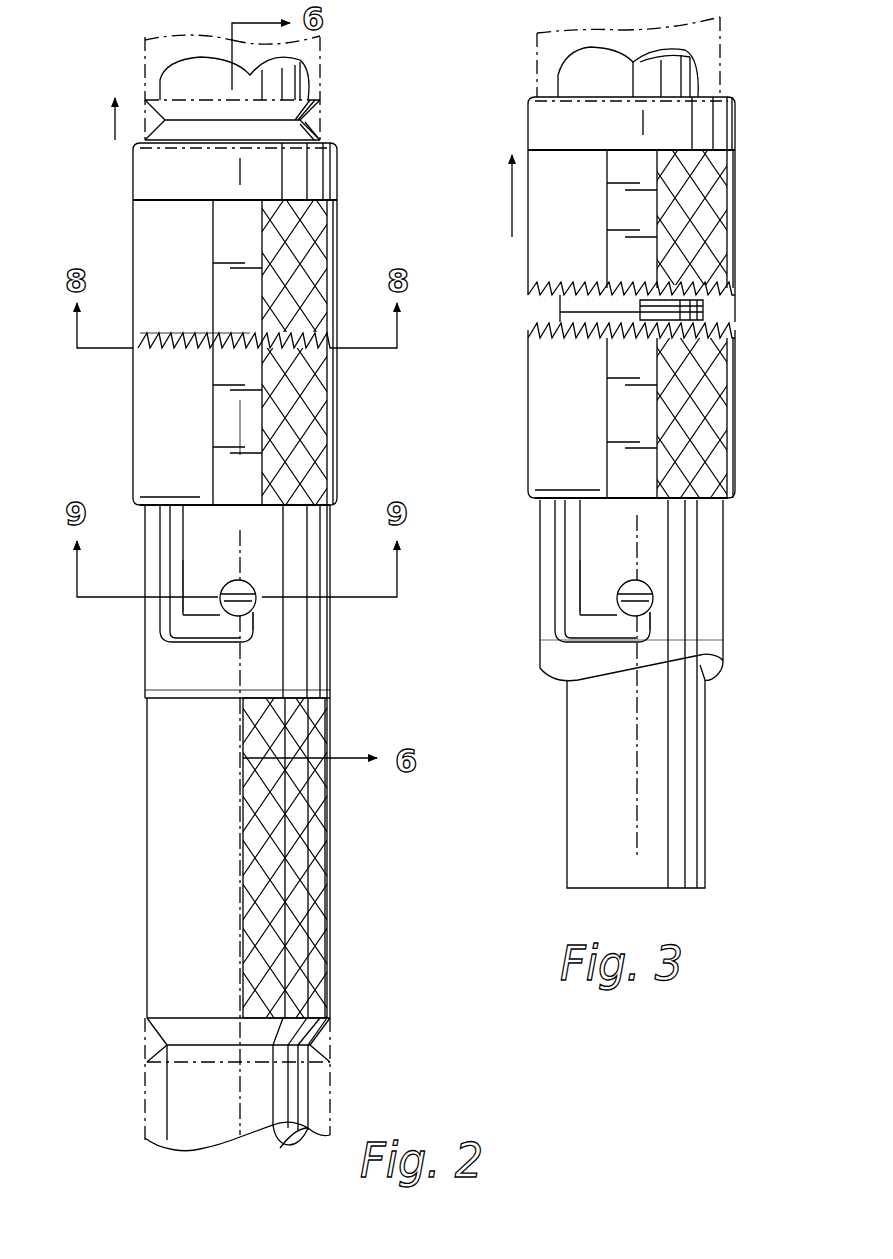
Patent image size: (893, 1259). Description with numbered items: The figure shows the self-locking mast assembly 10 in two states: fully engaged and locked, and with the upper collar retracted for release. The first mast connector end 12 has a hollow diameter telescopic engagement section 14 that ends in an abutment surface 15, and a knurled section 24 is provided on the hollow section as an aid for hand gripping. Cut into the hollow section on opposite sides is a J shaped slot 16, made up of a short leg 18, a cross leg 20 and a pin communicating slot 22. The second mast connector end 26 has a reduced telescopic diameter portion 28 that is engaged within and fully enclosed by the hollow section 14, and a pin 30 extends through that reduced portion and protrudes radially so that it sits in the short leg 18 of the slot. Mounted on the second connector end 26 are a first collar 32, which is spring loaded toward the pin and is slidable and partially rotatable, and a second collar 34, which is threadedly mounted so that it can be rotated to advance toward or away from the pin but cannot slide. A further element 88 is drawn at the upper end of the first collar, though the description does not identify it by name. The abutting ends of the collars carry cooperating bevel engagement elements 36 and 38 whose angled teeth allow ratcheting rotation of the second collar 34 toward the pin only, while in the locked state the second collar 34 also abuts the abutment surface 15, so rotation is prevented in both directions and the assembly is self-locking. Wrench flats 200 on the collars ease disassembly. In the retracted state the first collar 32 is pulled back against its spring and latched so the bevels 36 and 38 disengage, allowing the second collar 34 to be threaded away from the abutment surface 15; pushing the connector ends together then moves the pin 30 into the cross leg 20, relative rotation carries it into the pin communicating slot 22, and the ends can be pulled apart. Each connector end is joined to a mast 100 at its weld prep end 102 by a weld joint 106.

In FIG. 2, the self-locking mast assembly 10 is at (112, 752).
In FIG. 3, the self-locking mast assembly 10 is at (538, 737).
In FIG. 2, the first mast connector end 12 is at (147, 937).
In FIG. 2, the hollow diameter telescopic engagement section 14 is at (145, 662).
In FIG. 3, the hollow diameter telescopic engagement section 14 is at (540, 610).
In FIG. 2, the abutment surface 15 is at (308, 503).
In FIG. 3, the abutment surface 15 is at (710, 497).
In FIG. 2, the J shaped slot 16 is at (160, 632).
In FIG. 3, the J shaped slot 16 is at (555, 632).
In FIG. 2, the short leg 18 is at (257, 622).
In FIG. 3, the short leg 18 is at (652, 622).
In FIG. 2, the cross leg 20 is at (197, 635).
In FIG. 3, the cross leg 20 is at (612, 635).
In FIG. 2, the pin communicating slot 22 is at (167, 562).
In FIG. 3, the pin communicating slot 22 is at (565, 555).
In FIG. 2, the knurled section 24 is at (330, 883).
In FIG. 2, the second mast connector end 26 is at (178, 72).
In FIG. 3, the second mast connector end 26 is at (558, 68).
In FIG. 3, the telescopic diameter portion 28 is at (567, 808).
In FIG. 2, the pin 30 is at (245, 603).
In FIG. 3, the pin 30 is at (642, 592).
In FIG. 2, the first collar 32 is at (133, 218).
In FIG. 3, the first collar 32 is at (735, 178).
In FIG. 2, the second collar 34 is at (133, 437).
In FIG. 3, the second collar 34 is at (735, 412).
In FIG. 2, the bevel engagement element 36 is at (178, 345).
In FIG. 3, the bevel engagement element 36 is at (557, 335).
In FIG. 2, the bevel engagement element 38 is at (150, 330).
In FIG. 3, the bevel engagement element 38 is at (528, 258).
In FIG. 2, the cap 88 is at (337, 175).
In FIG. 3, the cap 88 is at (735, 120).
In FIG. 2, the mast 100 is at (145, 1115).
In FIG. 2, the weld prep end 102 is at (147, 1062).
In FIG. 2, the weld joint 106 is at (145, 1040).
In FIG. 2, the wrench flats 200 is at (245, 427).
In FIG. 3, the wrench flats 200 is at (640, 408).